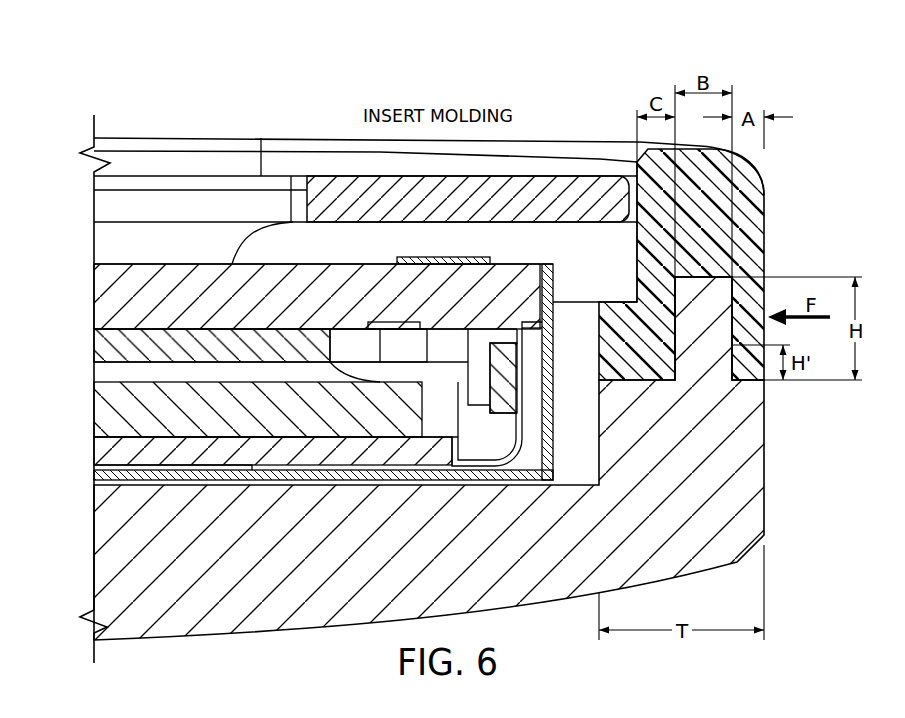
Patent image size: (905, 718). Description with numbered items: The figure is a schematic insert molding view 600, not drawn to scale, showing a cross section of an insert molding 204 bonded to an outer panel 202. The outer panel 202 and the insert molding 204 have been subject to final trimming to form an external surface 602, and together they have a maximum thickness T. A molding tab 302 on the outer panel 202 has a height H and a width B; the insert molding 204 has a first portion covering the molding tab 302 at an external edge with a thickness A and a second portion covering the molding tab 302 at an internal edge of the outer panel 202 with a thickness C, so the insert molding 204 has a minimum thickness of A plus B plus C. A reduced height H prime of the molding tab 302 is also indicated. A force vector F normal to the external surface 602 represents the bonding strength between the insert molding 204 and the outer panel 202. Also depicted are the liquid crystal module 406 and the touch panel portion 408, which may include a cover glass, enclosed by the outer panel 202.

The insert molding view 600 is at (359, 72).
The outer panel 202 is at (766, 426).
The insert molding 204 is at (766, 232).
The molding tab 302 is at (690, 276).
The liquid crystal module 406 is at (100, 352).
The touch panel portion 408 is at (103, 201).
The external surface 602 is at (772, 475).